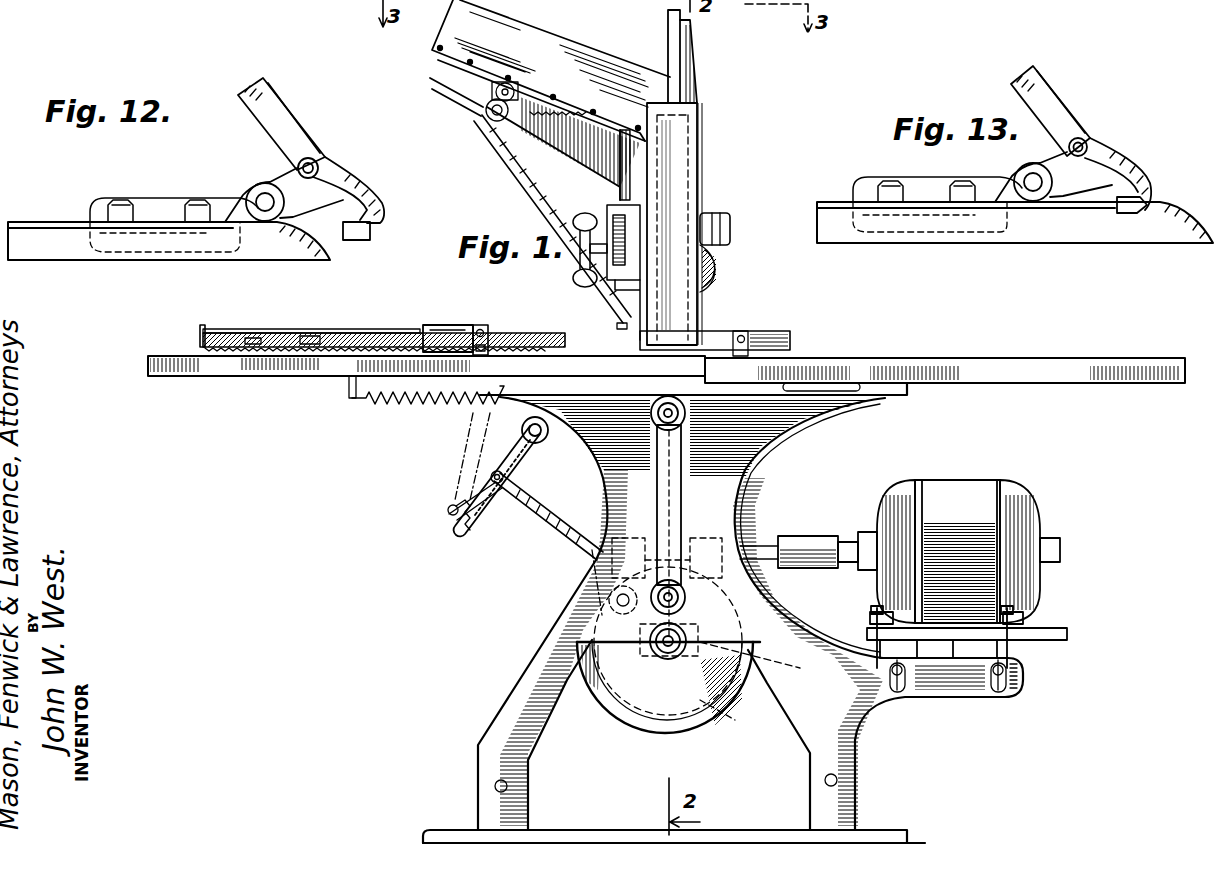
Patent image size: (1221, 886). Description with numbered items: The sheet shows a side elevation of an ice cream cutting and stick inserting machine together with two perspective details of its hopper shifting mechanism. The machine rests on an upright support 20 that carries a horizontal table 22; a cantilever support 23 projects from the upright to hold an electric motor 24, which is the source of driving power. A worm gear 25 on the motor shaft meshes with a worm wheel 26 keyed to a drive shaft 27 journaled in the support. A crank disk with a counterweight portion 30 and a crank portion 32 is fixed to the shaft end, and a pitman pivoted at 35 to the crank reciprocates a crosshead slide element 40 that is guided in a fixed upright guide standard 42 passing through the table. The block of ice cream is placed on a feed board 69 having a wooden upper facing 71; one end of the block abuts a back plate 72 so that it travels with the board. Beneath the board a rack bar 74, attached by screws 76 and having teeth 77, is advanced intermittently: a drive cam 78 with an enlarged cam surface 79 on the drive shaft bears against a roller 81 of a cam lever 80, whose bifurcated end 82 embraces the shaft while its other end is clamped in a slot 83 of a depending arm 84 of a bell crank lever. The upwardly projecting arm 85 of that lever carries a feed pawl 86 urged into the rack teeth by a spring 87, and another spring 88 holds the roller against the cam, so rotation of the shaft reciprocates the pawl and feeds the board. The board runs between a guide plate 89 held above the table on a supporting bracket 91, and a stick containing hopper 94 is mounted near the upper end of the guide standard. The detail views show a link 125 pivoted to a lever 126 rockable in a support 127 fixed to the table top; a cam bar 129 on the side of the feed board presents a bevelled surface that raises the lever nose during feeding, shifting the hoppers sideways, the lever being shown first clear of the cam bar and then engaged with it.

In FIG. 1, the upright support 20 is at (727, 469).
In FIG. 1, the horizontal table 22 is at (932, 370).
In FIG. 1, the cantilever support 23 is at (971, 694).
In FIG. 1, the electric motor 24 is at (957, 485).
In FIG. 1, the worm gear 25 is at (687, 527).
In FIG. 1, the worm wheel 26 is at (745, 545).
In FIG. 1, the drive shaft 27 is at (660, 650).
In FIG. 1, the counterweight portion 30 is at (690, 737).
In FIG. 1, the crank portion 32 is at (697, 618).
In FIG. 1, the pivot 35 is at (688, 600).
In FIG. 1, the crosshead slide element 40 is at (690, 292).
In FIG. 1, the guide standard 42 is at (677, 133).
In FIG. 1, the feed board 69 is at (340, 340).
In FIG. 1, the wooden upper facing 71 is at (302, 338).
In FIG. 1, the back plate 72 is at (200, 330).
In FIG. 1, the rack bar 74 is at (300, 364).
In FIG. 1, the screws 76 is at (252, 336).
In FIG. 1, the teeth 77 is at (355, 358).
In FIG. 1, the drive cam 78 is at (707, 718).
In FIG. 1, the enlarged cam surface 79 is at (767, 653).
In FIG. 1, the cam lever 80 is at (537, 532).
In FIG. 1, the roller 81 is at (600, 597).
In FIG. 1, the bifurcated end 82 is at (660, 700).
In FIG. 1, the slot 83 is at (455, 530).
In FIG. 1, the depending arm 84 is at (530, 455).
In FIG. 1, the upwardly projecting arm 85 is at (490, 420).
In FIG. 1, the feed pawl 86 is at (547, 357).
In FIG. 1, the spring 87 is at (473, 428).
In FIG. 1, the spring 88 is at (405, 400).
In FIG. 1, the guide plate 89 is at (440, 325).
In FIG. 1, the supporting bracket 91 is at (485, 328).
In FIG. 1, the stick containing hopper 94 is at (452, 45).
In FIG. 12, the link 125 is at (297, 120).
In FIG. 13, the link 125 is at (1067, 97).
In FIG. 12, the lever 126 is at (370, 193).
In FIG. 13, the lever 126 is at (1137, 163).
In FIG. 12, the support 127 is at (255, 185).
In FIG. 13, the support 127 is at (1025, 170).
In FIG. 12, the cam bar 129 is at (33, 222).
In FIG. 13, the cam bar 129 is at (832, 202).